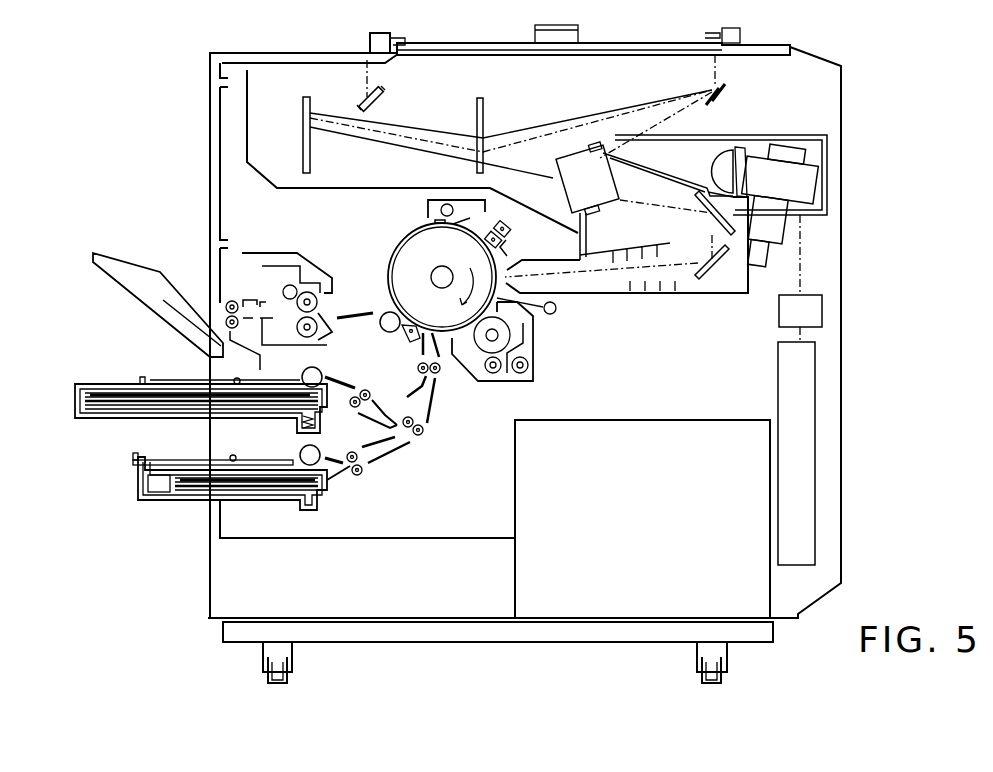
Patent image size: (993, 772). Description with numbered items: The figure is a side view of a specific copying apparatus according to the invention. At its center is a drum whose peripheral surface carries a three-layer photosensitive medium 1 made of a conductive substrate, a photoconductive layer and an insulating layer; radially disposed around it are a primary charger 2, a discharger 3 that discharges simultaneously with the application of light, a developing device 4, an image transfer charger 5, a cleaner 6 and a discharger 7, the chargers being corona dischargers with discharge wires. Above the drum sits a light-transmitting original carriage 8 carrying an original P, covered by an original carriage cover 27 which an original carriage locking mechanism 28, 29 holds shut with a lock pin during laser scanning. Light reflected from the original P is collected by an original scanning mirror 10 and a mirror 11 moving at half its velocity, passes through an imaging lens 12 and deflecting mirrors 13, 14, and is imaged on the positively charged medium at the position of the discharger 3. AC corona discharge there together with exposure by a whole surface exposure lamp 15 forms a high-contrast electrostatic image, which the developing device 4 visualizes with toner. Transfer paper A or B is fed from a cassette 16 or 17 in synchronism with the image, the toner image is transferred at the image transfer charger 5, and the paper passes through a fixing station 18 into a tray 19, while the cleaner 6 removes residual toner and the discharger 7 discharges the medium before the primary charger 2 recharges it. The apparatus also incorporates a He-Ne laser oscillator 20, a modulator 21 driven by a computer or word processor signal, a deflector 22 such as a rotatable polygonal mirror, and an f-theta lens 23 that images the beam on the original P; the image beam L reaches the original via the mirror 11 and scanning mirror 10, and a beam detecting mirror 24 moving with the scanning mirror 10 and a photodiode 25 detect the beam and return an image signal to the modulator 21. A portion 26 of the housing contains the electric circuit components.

The photosensitive medium 1 is at (392, 253).
The primary charger 2 is at (506, 241).
The discharger 3 is at (522, 258).
The developing device 4 is at (534, 346).
The image transfer charger 5 is at (410, 331).
The cleaner 6 is at (428, 208).
The discharger 7 is at (503, 215).
The light-transmitting original carriage 8 is at (570, 53).
The original scanning mirror 10 is at (362, 100).
The mirror 11 is at (303, 150).
The imaging lens 12 is at (605, 198).
The deflecting mirror 13 is at (713, 225).
The deflecting mirror 14 is at (702, 264).
The whole surface exposure lamp 15 is at (557, 311).
The cassette 16 is at (100, 421).
The cassette 17 is at (155, 502).
The fixing station 18 is at (222, 274).
The tray 19 is at (105, 266).
The He-Ne laser oscillator 20 is at (800, 418).
The modulator 21 is at (823, 313).
The deflector 22 is at (810, 181).
The lens 23 is at (723, 156).
The beam detecting mirror 24 is at (718, 90).
The photodiode 25 is at (716, 104).
The portion for containing electric circuit components 26 is at (658, 519).
The original carriage cover 27 is at (550, 28).
The original carriage locking mechanism 28 is at (382, 33).
The original carriage locking mechanism 29 is at (730, 30).
The transfer paper A is at (120, 388).
The transfer paper B is at (200, 494).
The image beam L is at (437, 136).
The original P is at (614, 45).